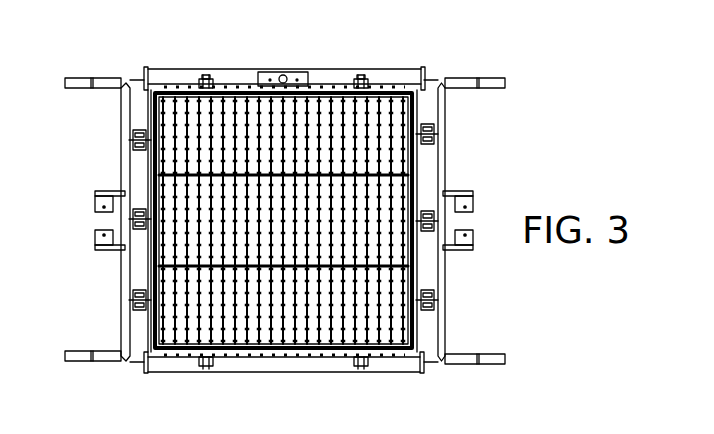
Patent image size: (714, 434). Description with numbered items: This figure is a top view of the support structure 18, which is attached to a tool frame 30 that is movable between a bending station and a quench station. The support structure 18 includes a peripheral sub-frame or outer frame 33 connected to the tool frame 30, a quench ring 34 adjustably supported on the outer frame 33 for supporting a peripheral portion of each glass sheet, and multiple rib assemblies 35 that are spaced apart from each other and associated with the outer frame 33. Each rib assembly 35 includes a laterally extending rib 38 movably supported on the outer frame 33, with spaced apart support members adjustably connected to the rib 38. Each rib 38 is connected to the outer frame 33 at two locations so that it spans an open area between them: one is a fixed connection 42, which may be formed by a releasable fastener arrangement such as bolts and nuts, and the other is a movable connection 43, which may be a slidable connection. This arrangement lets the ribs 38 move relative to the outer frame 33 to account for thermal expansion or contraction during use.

The support structure 18 is at (166, 80).
The tool frame 30 is at (197, 68).
The fixed connection 42 is at (336, 80).
The outer frame 33 is at (418, 110).
The quench ring 34 is at (410, 160).
The rib assemblies 35 is at (375, 313).
The rib 38 is at (219, 324).
The movable connection 43 is at (330, 361).